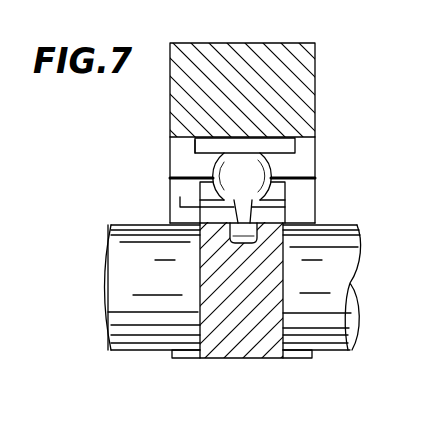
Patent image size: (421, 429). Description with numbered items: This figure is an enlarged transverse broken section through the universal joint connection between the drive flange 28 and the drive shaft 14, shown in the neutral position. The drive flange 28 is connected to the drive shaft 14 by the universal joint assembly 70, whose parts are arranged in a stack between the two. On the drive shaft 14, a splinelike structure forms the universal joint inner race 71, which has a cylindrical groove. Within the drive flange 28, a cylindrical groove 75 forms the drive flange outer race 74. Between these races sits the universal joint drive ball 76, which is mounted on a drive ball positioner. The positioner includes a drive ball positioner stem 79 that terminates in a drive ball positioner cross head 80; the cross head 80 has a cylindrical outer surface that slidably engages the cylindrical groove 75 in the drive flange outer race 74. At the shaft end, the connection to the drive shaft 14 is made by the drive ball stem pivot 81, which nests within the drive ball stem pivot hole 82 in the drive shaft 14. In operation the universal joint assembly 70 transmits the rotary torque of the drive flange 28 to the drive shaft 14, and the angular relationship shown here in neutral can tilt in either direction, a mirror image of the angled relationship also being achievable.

The drive shaft 14 is at (122, 292).
The drive flange 28 is at (263, 42).
The universal joint assembly 70 is at (318, 167).
The universal joint inner race 71 is at (286, 198).
The drive flange outer race 74 is at (318, 147).
The cylindrical groove 75 is at (300, 147).
The universal joint drive ball 76 is at (214, 165).
The drive ball positioner stem 79 is at (180, 197).
The drive ball positioner cross head 80 is at (196, 143).
The drive ball stem pivot 81 is at (286, 221).
The drive ball stem pivot hole 82 is at (254, 230).